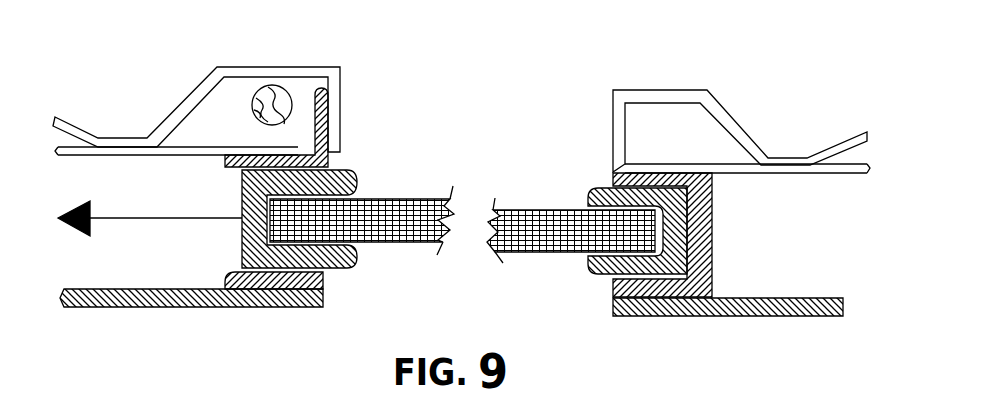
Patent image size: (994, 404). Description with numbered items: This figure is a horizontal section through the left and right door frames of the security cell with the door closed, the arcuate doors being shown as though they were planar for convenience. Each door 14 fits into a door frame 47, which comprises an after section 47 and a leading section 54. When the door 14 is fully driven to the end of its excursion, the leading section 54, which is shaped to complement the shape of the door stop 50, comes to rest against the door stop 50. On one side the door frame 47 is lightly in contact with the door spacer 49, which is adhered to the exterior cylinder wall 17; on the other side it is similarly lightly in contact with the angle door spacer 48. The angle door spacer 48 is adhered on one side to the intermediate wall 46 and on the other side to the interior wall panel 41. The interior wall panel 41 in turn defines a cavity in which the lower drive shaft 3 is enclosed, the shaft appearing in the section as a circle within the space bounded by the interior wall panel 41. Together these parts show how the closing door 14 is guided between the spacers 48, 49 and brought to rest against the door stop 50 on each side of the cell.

The lower drive shaft 3 is at (273, 98).
The door 14 is at (547, 210).
The exterior cylinder wall 17 is at (177, 307).
The interior wall panel 41 is at (170, 113).
The intermediate wall 46 is at (103, 153).
The door frame 47 is at (242, 238).
The angle door spacer 48 is at (232, 164).
The door spacer 49 is at (323, 283).
The door stop 50 is at (713, 223).
The leading section 54 is at (604, 273).